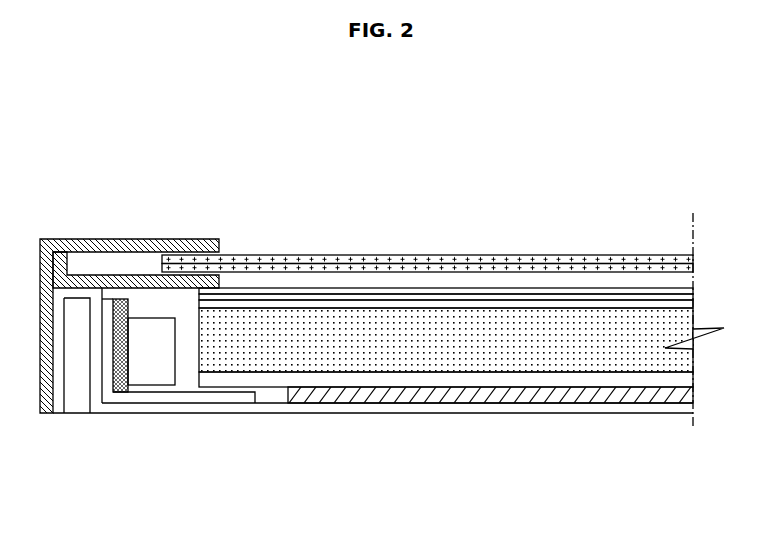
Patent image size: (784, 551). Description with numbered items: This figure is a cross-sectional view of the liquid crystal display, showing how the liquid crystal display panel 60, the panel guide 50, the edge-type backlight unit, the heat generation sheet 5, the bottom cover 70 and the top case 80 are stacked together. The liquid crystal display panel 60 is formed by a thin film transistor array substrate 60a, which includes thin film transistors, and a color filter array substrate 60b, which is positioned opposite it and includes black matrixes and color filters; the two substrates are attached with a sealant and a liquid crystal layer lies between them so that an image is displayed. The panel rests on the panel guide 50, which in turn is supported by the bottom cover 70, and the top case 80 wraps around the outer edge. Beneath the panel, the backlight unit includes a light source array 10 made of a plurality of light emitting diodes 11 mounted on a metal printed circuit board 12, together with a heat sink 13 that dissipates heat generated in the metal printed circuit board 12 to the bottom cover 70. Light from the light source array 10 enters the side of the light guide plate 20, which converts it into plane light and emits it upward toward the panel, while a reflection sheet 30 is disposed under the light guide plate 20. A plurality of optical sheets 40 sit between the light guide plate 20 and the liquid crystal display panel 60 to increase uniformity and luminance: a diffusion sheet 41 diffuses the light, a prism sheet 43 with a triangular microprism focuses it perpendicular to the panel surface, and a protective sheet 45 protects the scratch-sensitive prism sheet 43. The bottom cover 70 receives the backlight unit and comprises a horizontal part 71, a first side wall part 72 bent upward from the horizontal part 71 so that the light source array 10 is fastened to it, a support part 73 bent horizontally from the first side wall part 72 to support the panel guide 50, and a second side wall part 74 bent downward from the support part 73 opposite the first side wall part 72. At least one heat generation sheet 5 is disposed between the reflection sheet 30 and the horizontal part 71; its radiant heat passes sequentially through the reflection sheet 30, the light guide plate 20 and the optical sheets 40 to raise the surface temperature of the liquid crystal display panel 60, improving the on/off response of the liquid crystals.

The heat generation sheet 5 is at (360, 392).
The light source array 10 is at (131, 247).
The light emitting diodes 11 is at (151, 328).
The metal printed circuit board 12 is at (123, 298).
The heat sink 13 is at (107, 308).
The light guide plate 20 is at (455, 362).
The reflection sheet 30 is at (542, 378).
The optical sheets 40 is at (446, 236).
The diffusion sheet 41 is at (553, 193).
The prism sheet 43 is at (500, 300).
The protective sheet 45 is at (536, 292).
The panel guide 50 is at (85, 250).
The liquid crystal display panel 60 is at (427, 217).
The thin film transistor array substrate 60a is at (378, 194).
The color filter array substrate 60b is at (360, 257).
The bottom cover 70 is at (366, 406).
The horizontal part 71 is at (230, 408).
The first side wall part 72 is at (96, 414).
The support part 73 is at (70, 414).
The second side wall part 74 is at (52, 390).
The top case 80 is at (52, 243).